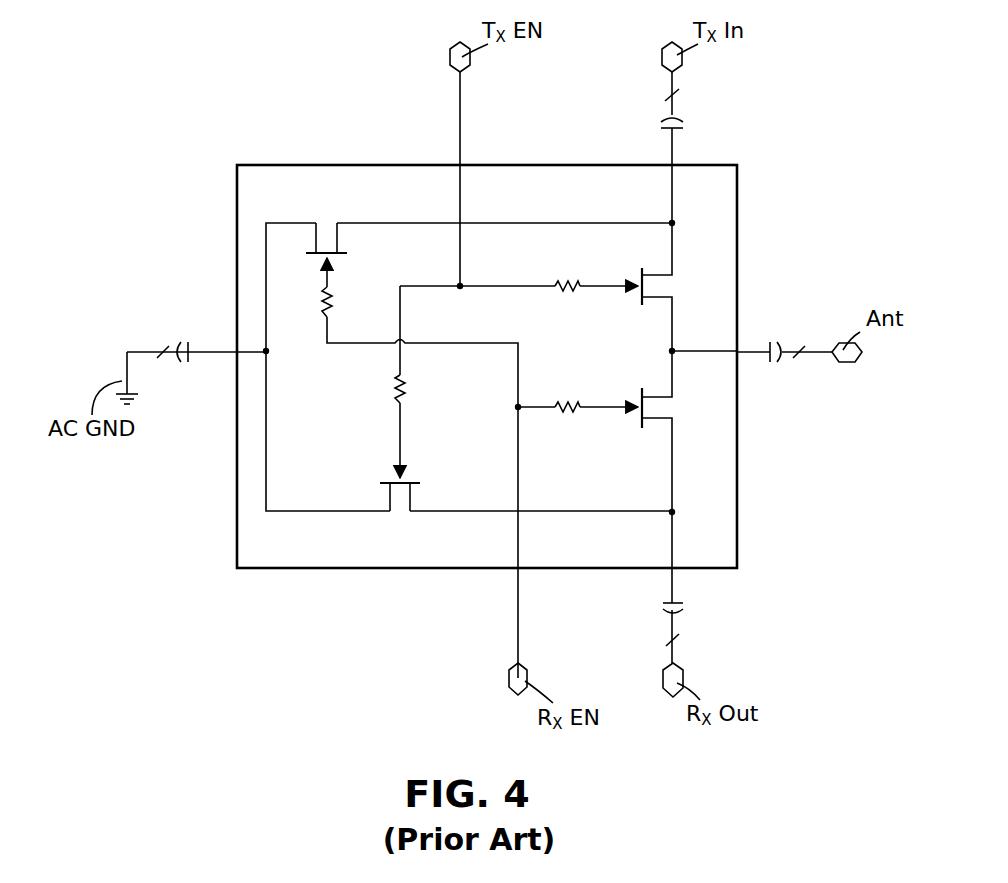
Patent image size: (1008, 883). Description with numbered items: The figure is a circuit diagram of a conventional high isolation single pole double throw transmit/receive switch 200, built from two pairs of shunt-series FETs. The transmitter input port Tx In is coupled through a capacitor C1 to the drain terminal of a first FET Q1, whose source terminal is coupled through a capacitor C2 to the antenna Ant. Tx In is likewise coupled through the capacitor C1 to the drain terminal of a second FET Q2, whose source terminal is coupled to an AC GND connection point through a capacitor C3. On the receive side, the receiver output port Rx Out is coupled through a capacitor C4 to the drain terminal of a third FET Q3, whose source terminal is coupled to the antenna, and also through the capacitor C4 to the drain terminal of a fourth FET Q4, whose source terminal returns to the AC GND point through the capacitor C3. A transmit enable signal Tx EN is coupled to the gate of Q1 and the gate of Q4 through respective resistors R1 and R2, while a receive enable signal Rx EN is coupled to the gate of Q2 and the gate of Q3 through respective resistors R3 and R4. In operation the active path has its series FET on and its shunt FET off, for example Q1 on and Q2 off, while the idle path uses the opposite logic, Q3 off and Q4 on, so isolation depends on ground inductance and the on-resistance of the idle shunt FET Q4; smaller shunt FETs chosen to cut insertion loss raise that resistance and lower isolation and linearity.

The conventional HISL SPDT T/R switch 200 is at (146, 144).
The first FET Q1 is at (680, 288).
The second FET Q2 is at (326, 215).
The third FET Q3 is at (682, 409).
The fourth FET Q4 is at (400, 516).
The resistor R1 is at (562, 300).
The resistor R2 is at (388, 392).
The resistor R3 is at (312, 306).
The resistor R4 is at (562, 424).
The capacitor C1 is at (691, 124).
The capacitor C2 is at (772, 373).
The capacitor C3 is at (188, 373).
The capacitor C4 is at (694, 603).